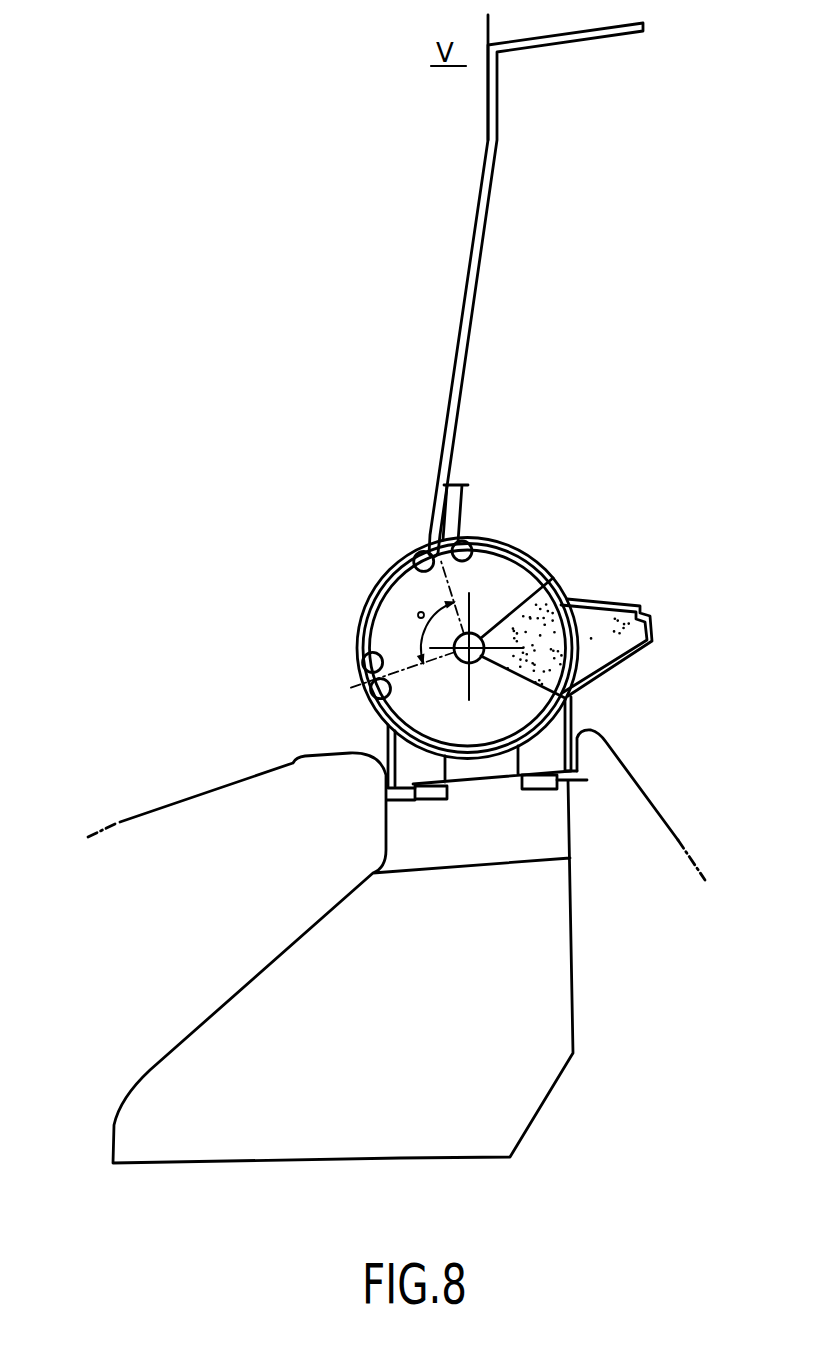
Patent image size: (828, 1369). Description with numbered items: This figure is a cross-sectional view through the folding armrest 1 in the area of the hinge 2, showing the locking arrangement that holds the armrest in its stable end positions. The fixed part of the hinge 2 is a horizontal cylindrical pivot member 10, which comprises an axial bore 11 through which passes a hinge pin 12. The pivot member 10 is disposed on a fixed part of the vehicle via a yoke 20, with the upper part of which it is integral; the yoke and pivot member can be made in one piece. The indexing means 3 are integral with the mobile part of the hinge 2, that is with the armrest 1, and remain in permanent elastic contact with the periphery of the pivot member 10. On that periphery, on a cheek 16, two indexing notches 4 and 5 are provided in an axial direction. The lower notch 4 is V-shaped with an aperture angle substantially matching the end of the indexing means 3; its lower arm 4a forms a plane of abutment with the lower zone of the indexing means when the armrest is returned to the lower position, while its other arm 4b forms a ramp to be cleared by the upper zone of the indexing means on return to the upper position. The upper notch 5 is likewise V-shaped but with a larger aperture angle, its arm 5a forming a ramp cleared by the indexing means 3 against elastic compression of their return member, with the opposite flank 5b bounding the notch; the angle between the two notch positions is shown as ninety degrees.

The folding armrest 1 is at (467, 282).
The hinge 2 is at (445, 616).
The indexing means 3 is at (462, 488).
The lower indexing notch 4 is at (339, 678).
The lower arm of notch 4a is at (377, 708).
The other arm of notch 4b is at (368, 650).
The upper indexing notch 5 is at (427, 522).
The arm of upper notch 5a is at (401, 558).
The groove lobe 5b is at (472, 542).
The pivot member 10 is at (517, 590).
The axial bore 11 is at (565, 576).
The hinge pin 12 is at (574, 700).
The cheek 16 is at (523, 545).
The yoke 20 is at (573, 928).